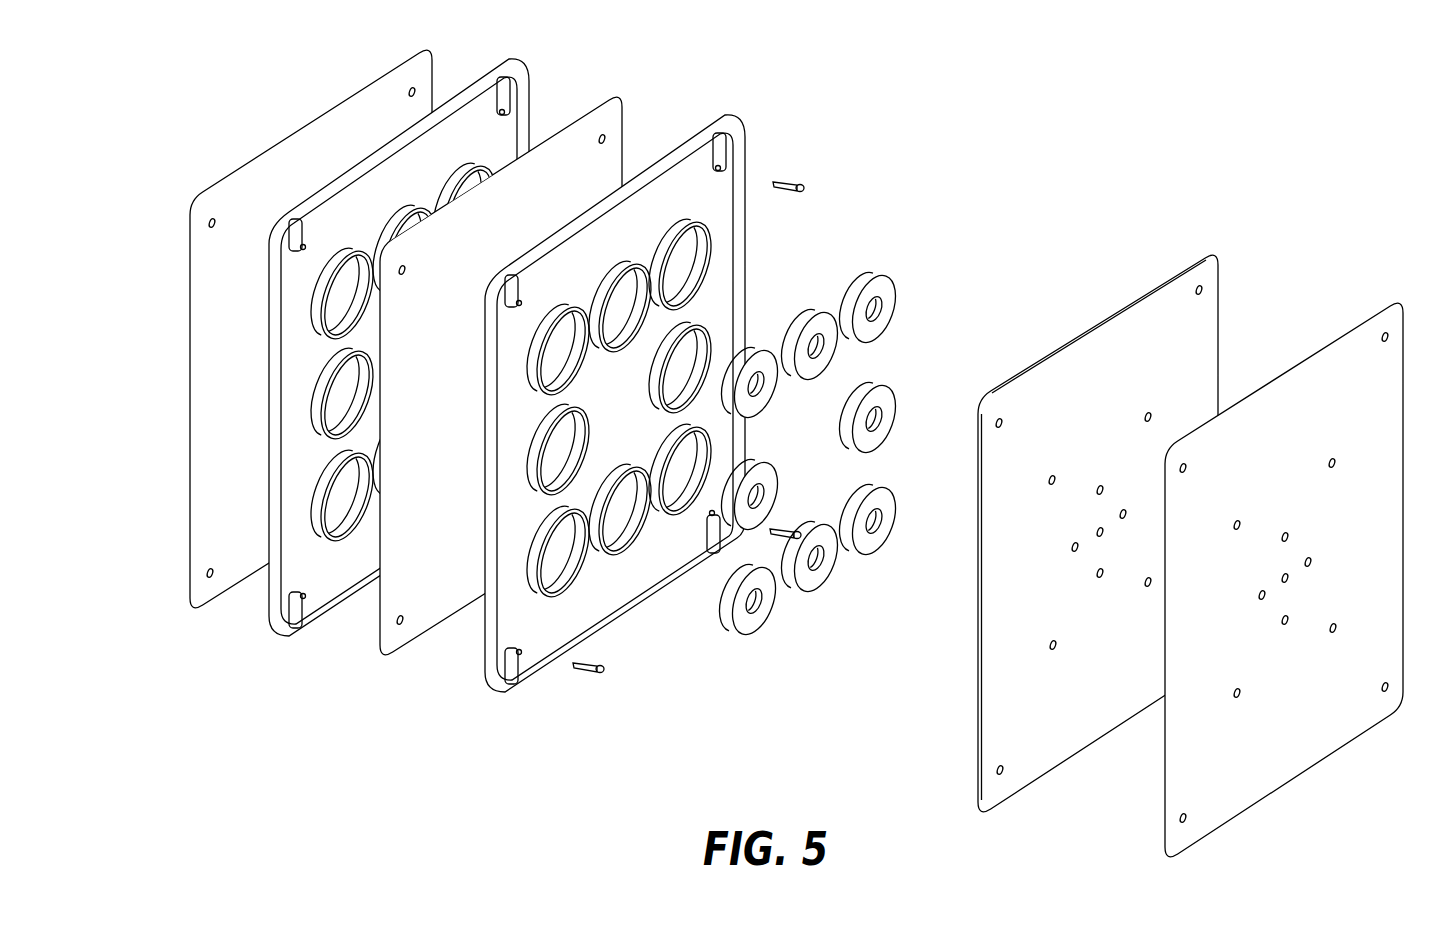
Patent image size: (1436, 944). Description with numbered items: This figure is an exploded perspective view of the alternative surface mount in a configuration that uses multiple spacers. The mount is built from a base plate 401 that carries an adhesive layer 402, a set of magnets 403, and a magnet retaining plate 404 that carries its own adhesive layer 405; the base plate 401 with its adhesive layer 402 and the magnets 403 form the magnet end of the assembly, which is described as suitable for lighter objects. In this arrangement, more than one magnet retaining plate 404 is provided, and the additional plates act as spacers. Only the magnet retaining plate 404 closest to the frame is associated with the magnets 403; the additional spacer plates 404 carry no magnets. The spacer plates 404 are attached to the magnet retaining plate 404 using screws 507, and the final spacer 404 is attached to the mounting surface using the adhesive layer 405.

The base plate 401 is at (1208, 257).
The adhesive layer 402 is at (1382, 303).
The magnets 403 is at (893, 298).
The magnet retaining plate 404 is at (742, 148).
The adhesive layer 405 is at (615, 100).
The screws 507 is at (802, 187).